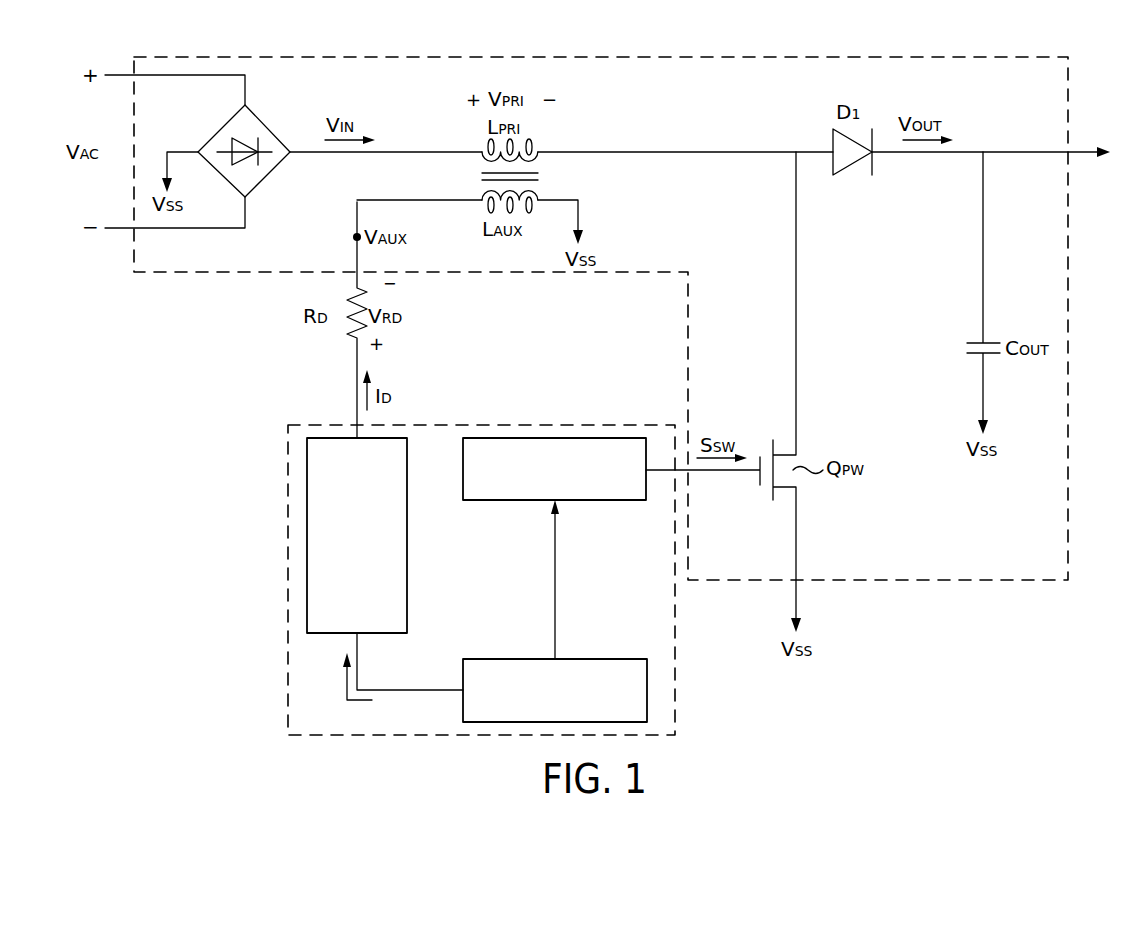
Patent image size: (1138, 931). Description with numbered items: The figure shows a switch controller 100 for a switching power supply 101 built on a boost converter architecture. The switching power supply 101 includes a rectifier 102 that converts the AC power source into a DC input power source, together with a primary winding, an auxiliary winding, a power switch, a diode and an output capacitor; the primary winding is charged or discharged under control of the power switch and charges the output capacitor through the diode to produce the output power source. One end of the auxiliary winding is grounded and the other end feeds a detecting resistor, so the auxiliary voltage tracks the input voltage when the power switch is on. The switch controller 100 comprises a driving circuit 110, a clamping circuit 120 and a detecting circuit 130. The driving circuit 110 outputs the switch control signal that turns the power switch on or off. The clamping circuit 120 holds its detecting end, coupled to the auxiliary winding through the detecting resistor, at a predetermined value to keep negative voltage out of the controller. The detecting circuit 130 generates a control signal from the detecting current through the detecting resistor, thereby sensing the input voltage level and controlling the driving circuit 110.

The switch controller 100 is at (288, 578).
The switching power supply 101 is at (673, 56).
The rectifier 102 is at (271, 128).
The driving circuit 110 is at (610, 500).
The clamping circuit 120 is at (407, 565).
The detecting circuit 130 is at (612, 659).